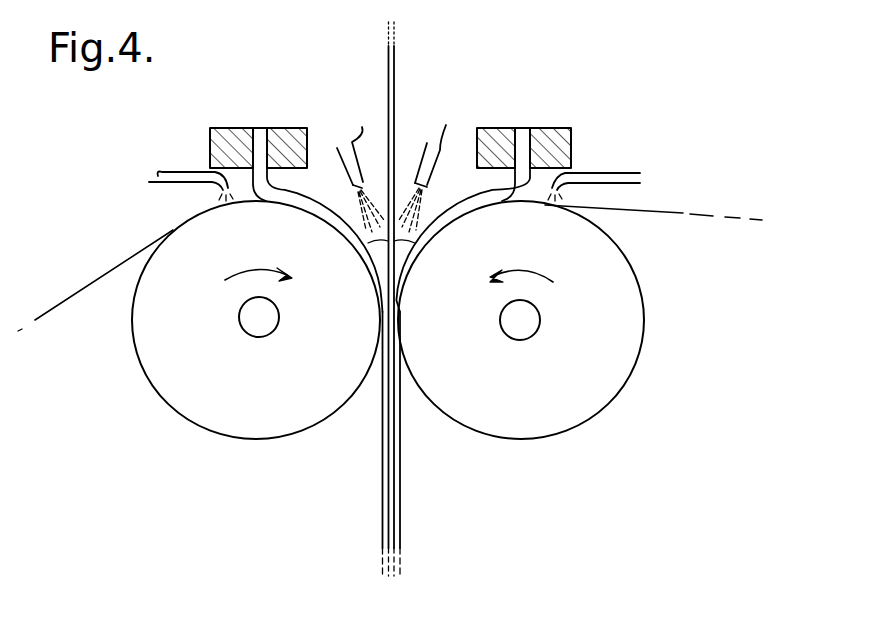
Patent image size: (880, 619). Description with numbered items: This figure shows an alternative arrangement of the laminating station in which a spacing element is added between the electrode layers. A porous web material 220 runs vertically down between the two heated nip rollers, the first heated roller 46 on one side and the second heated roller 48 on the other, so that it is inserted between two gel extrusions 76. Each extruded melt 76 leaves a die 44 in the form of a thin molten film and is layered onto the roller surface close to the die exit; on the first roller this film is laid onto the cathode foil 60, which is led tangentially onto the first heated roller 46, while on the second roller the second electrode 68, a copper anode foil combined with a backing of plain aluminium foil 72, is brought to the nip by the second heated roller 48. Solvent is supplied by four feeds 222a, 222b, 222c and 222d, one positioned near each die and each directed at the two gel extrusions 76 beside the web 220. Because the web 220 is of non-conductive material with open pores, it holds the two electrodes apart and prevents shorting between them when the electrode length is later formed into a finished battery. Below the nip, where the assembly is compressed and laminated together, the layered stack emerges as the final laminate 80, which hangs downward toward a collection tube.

The web material 220 is at (395, 90).
The final laminate 80 is at (398, 482).
The first heated roller 46 is at (160, 348).
The second heated roller 48 is at (615, 350).
The cathode foil 60 is at (113, 268).
The second electrode 68 is at (675, 212).
The aluminium foil 72 is at (726, 217).
The die 44 is at (228, 128).
The extruded melt 76 is at (320, 210).
The feed 222a is at (165, 172).
The feed 222b is at (362, 127).
The feed 222c is at (446, 125).
The feed 222d is at (612, 175).